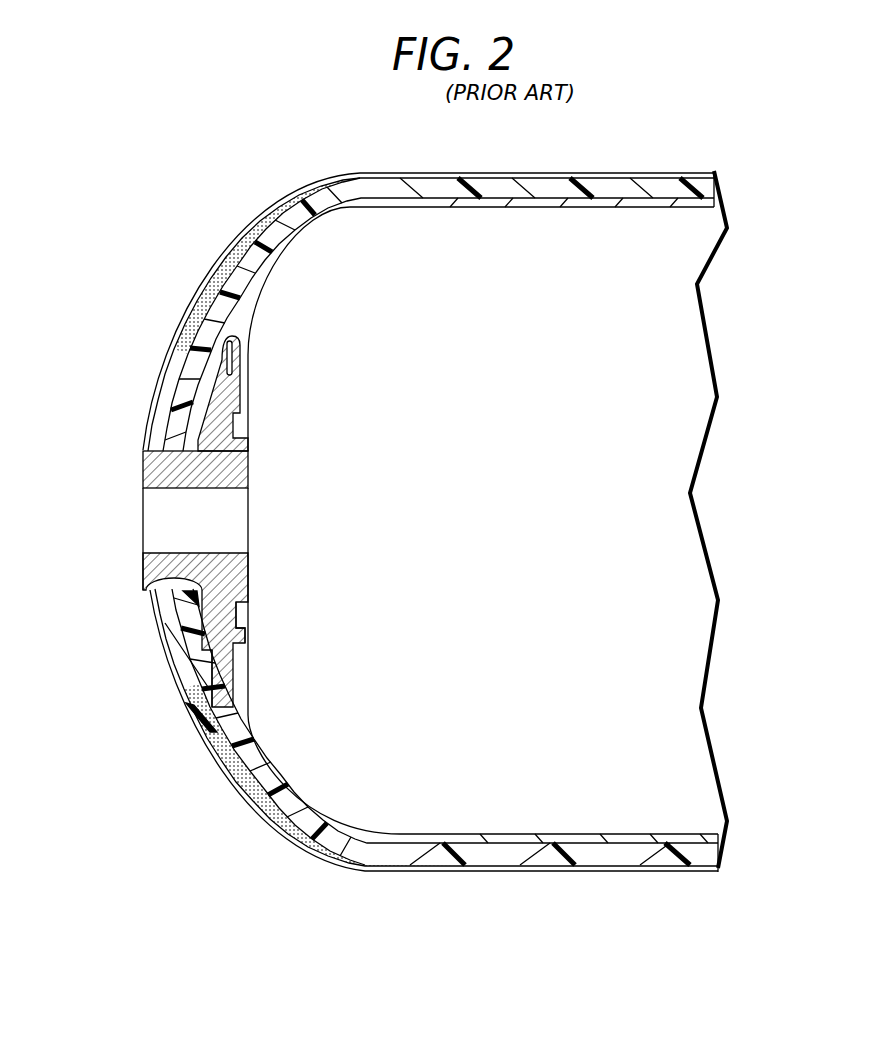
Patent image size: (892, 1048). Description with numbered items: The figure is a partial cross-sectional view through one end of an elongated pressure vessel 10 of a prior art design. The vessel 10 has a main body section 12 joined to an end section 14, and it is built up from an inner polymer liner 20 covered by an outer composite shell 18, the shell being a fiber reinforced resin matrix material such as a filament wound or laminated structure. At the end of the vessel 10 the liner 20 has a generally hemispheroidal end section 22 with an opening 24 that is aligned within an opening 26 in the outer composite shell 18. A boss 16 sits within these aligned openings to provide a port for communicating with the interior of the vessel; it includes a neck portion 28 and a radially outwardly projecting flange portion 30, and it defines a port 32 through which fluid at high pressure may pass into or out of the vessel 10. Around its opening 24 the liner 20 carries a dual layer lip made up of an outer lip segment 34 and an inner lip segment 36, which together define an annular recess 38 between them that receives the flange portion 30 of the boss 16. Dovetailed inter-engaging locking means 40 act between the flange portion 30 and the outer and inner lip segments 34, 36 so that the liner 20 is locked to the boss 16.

The pressure vessel 10 is at (162, 235).
The main body section 12 is at (670, 188).
The end section 14 is at (234, 238).
The boss 16 is at (134, 583).
The outer composite shell 18 is at (587, 172).
The inner polymer liner 20 is at (720, 205).
The hemispheroidal end section 22 is at (347, 207).
The opening 24 is at (143, 565).
The opening 26 is at (145, 588).
The neck portion 28 is at (142, 470).
The flange portion 30 is at (200, 438).
The port 32 is at (160, 492).
The outer lip segment 34 is at (225, 672).
The inner lip segment 36 is at (245, 641).
The annular recess 38 is at (188, 705).
The dovetailed inter-engaging locking means 40 is at (240, 428).